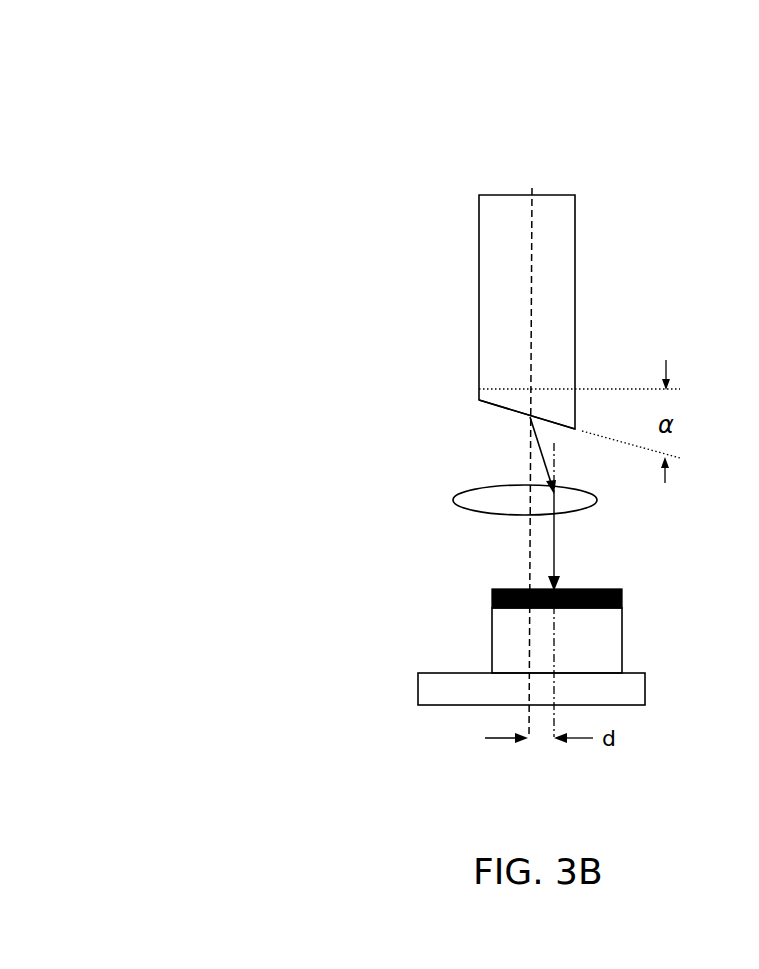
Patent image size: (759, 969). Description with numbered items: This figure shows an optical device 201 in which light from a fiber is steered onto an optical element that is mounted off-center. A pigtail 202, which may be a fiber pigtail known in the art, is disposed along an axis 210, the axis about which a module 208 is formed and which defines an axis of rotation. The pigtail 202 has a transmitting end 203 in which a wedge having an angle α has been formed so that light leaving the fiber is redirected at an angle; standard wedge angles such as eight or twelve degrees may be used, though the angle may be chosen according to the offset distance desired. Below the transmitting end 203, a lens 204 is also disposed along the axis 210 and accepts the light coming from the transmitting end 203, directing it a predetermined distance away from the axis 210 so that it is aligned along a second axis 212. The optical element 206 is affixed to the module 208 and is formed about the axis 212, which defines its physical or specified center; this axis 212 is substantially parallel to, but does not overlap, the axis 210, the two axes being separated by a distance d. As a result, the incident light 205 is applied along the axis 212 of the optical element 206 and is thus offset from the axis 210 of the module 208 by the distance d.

The optical device 201 is at (222, 98).
The pigtail 202 is at (479, 194).
The transmitting end 203 is at (472, 407).
The lens 204 is at (453, 494).
The incident light 205 is at (554, 540).
The optical element 206 is at (483, 607).
The module 208 is at (417, 672).
The axis 210 is at (532, 190).
The axis 212 is at (556, 635).